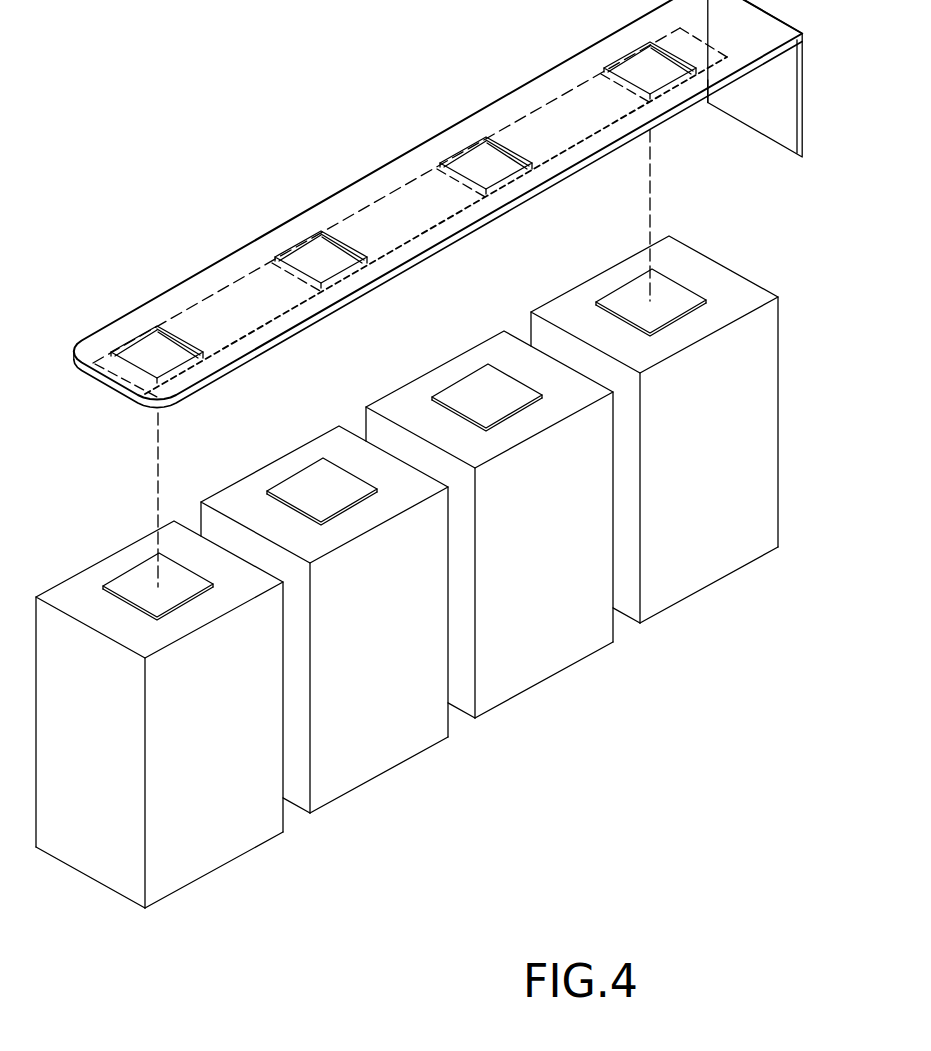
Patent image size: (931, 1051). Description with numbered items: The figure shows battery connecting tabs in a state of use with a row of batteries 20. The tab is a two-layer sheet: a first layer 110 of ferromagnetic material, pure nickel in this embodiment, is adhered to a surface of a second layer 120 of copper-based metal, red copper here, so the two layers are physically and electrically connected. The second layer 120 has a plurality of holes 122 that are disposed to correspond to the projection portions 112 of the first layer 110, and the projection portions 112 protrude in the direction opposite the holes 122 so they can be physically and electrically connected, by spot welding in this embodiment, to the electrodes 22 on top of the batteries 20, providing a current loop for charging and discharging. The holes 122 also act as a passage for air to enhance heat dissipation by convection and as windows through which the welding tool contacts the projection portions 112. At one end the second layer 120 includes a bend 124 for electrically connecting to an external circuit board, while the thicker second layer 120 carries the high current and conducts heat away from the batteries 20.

The batteries 20 is at (738, 588).
The electrodes 22 is at (133, 578).
The first layer 110 is at (232, 292).
The projection portions 112 is at (188, 378).
The second layer 120 is at (370, 185).
The holes 122 is at (137, 338).
The bend 124 is at (762, 115).